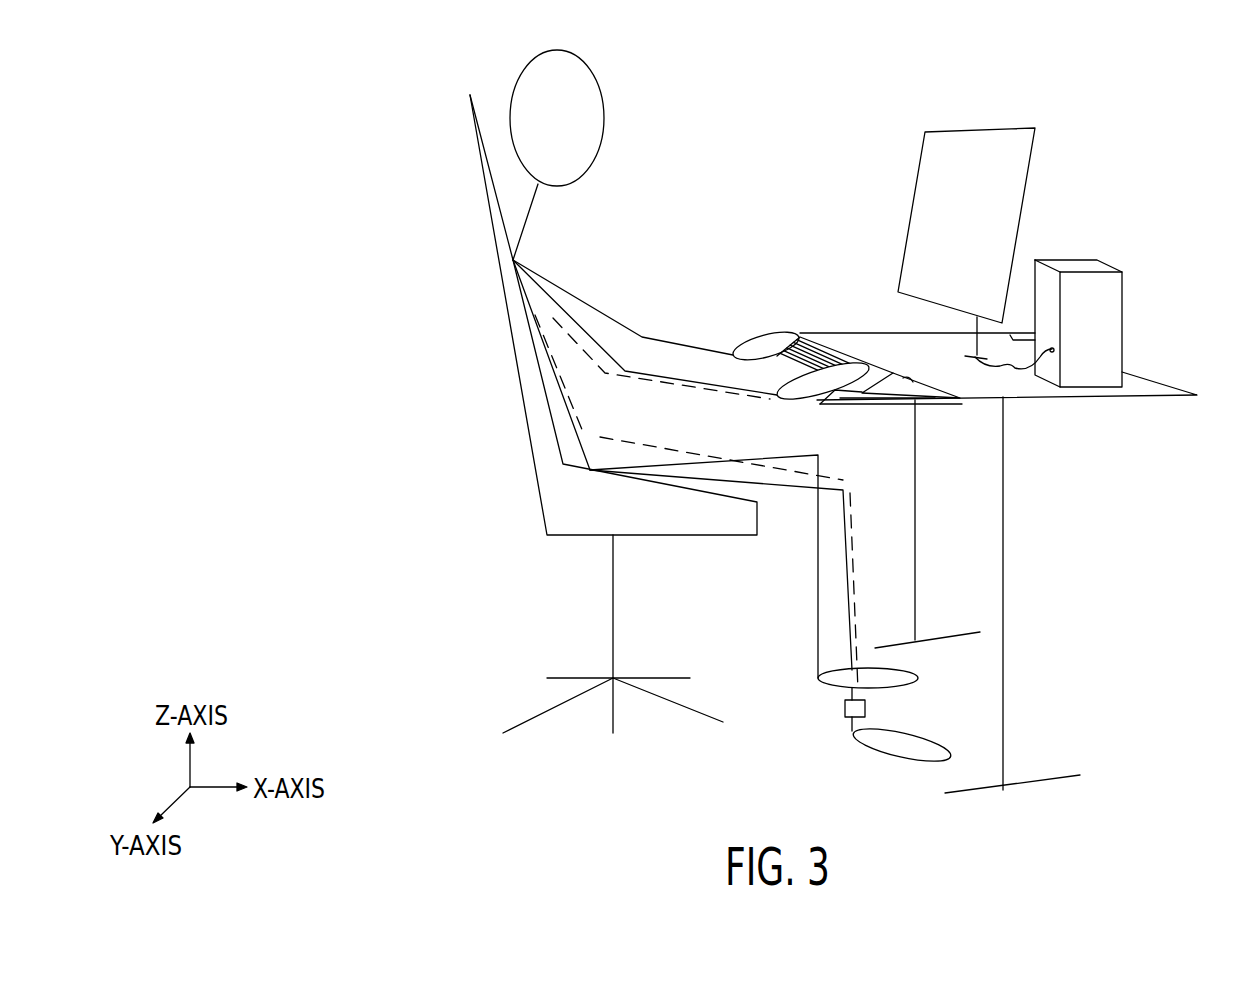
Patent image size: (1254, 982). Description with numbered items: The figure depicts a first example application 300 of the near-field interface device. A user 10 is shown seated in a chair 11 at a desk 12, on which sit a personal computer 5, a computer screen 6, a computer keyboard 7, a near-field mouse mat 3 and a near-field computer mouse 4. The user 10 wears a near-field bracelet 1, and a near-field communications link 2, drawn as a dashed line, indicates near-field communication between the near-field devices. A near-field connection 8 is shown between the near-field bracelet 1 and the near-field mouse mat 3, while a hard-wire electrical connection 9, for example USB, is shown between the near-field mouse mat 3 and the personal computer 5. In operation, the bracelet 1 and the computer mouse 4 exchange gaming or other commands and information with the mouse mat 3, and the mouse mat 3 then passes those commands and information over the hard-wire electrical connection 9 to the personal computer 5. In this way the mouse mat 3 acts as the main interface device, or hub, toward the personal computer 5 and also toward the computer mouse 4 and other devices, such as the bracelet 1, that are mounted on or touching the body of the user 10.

The first example application 300 is at (222, 120).
The near-field bracelet 1 is at (843, 708).
The near-field communications link 2 is at (850, 495).
The near-field mouse mat 3 is at (927, 393).
The near-field computer mouse 4 is at (863, 390).
The personal computer 5 is at (1100, 338).
The computer screen 6 is at (970, 222).
The computer keyboard 7 is at (810, 333).
The near-field connection 8 is at (900, 372).
The hard-wire electrical connection 9 is at (1005, 372).
The user 10 is at (569, 130).
The chair 11 is at (605, 517).
The desk 12 is at (1153, 387).